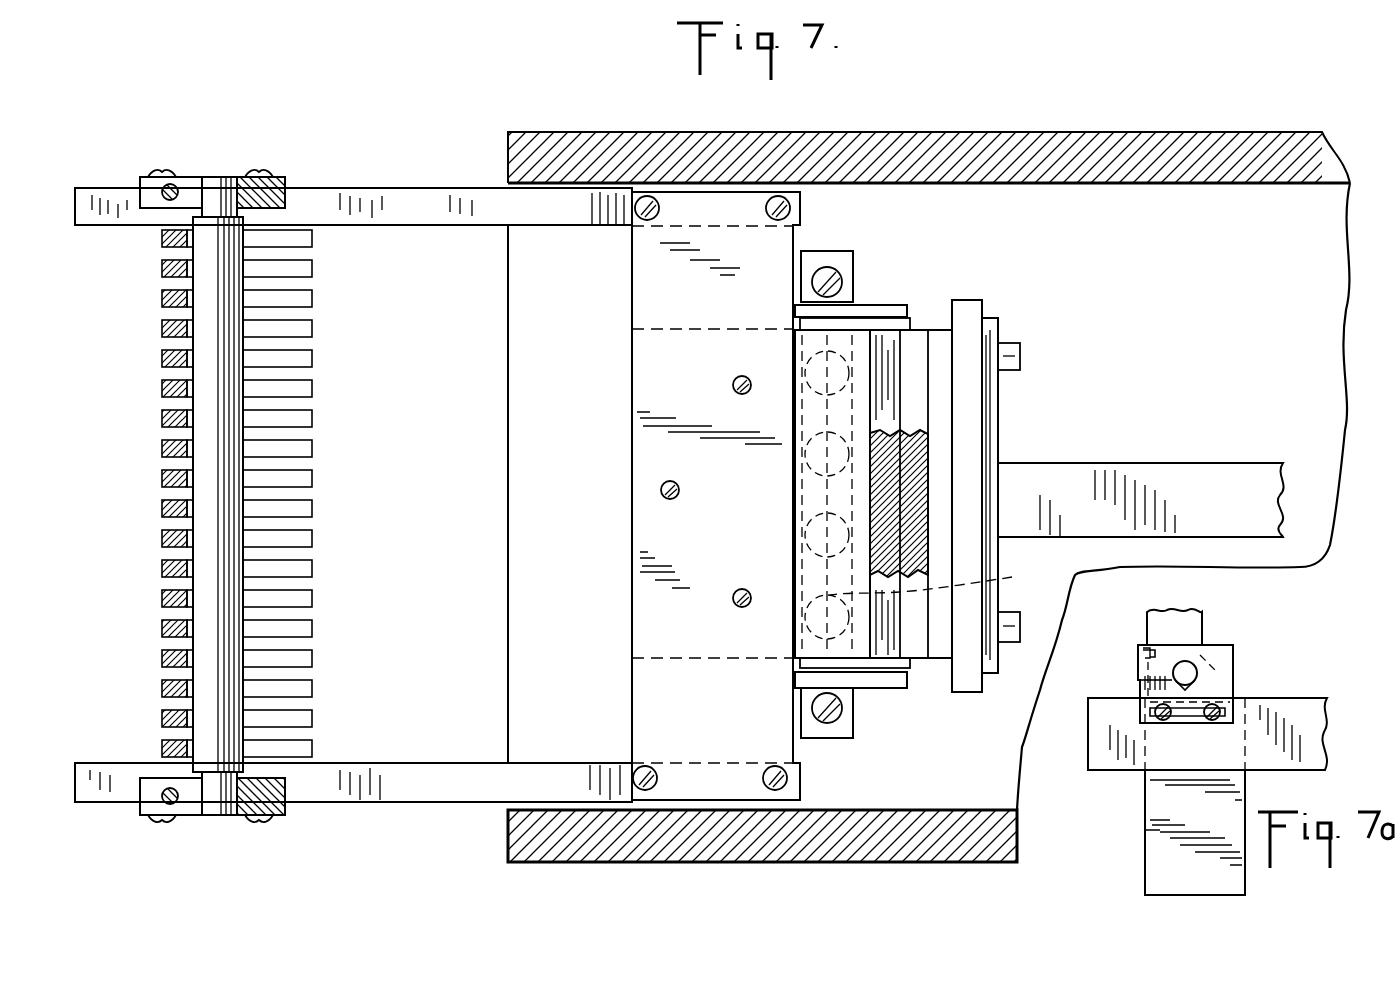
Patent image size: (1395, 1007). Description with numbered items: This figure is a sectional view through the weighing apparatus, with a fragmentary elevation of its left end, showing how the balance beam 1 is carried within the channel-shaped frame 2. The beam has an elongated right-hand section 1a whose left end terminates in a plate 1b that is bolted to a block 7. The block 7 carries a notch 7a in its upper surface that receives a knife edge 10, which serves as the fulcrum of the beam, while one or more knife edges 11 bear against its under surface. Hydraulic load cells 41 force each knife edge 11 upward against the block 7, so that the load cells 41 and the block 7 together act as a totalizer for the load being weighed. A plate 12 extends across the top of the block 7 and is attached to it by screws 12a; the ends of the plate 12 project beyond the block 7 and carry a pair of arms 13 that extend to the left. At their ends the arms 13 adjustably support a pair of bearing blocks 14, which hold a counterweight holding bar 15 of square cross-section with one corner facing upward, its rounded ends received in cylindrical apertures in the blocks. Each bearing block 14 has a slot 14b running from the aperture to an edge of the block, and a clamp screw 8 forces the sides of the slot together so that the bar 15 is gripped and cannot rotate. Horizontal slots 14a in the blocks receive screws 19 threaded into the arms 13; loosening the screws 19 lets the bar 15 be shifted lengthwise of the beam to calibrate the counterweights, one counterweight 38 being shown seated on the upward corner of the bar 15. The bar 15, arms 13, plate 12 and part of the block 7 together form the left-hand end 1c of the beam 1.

In FIG. 7, the balance beam 1 is at (1098, 240).
In FIG. 7, the elongated right-hand section 1a is at (1085, 475).
In FIG. 7, the plate 1b is at (993, 393).
In FIG. 7, the left-hand end 1c is at (410, 243).
In FIG. 7, the channel-shaped frame 2 is at (1200, 148).
In FIG. 7, the block 7 is at (655, 340).
In FIG. 7, the notch 7a is at (913, 348).
In FIG. 7, the clamp screw 8 is at (163, 190).
In FIG. 7A, the clamp screw 8 is at (1140, 655).
In FIG. 7, the knife edge 10 is at (930, 457).
In FIG. 7, the knife edge 11 is at (938, 580).
In FIG. 7, the plate 12 is at (640, 318).
In FIG. 7, the screws 12a is at (742, 395).
In FIG. 7, the arms 13 is at (424, 210).
In FIG. 7A, the arms 13 is at (1108, 752).
In FIG. 7, the bearing blocks 14 is at (188, 180).
In FIG. 7A, the bearing blocks 14 is at (1222, 655).
In FIG. 7A, the horizontal slots 14a is at (1198, 705).
In FIG. 7A, the slots 14b is at (1140, 672).
In FIG. 7, the counterweight holding bar 15 is at (215, 182).
In FIG. 7A, the counterweight holding bar 15 is at (1197, 673).
In FIG. 7, the screws 19 is at (157, 177).
In FIG. 7A, the screws 19 is at (1165, 720).
In FIG. 7, the counterweight 38 is at (300, 421).
In FIG. 7A, the counterweight 38 is at (1190, 627).
In FIG. 7, the hydraulic load cells 41 is at (850, 330).